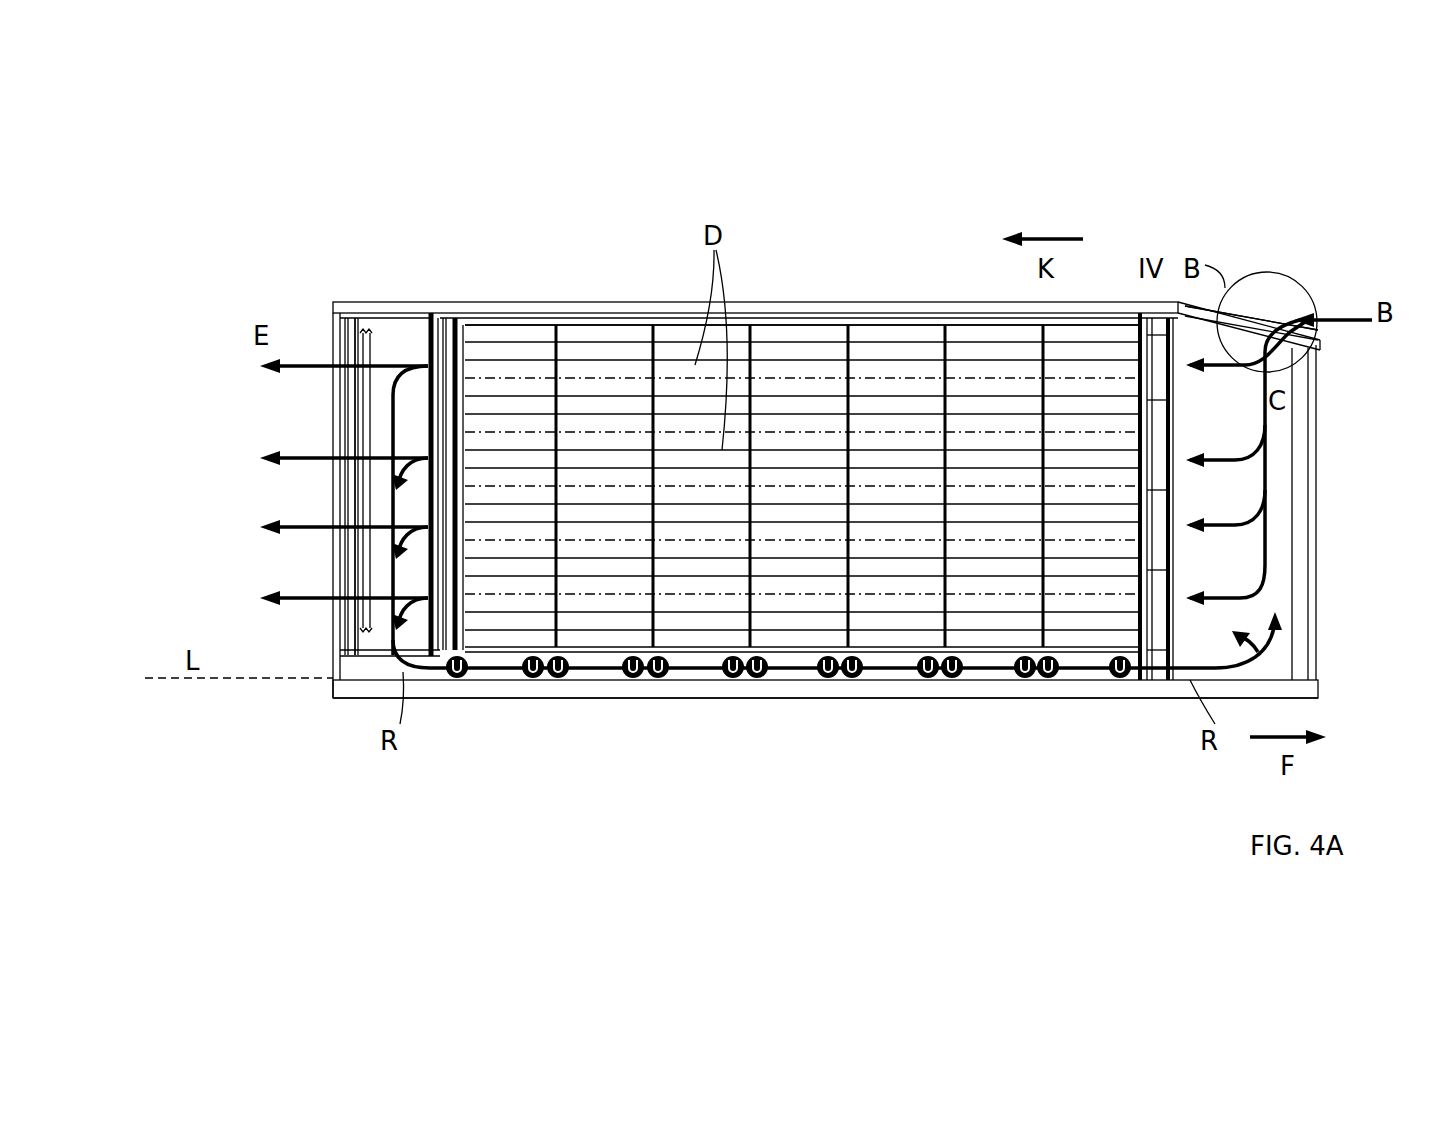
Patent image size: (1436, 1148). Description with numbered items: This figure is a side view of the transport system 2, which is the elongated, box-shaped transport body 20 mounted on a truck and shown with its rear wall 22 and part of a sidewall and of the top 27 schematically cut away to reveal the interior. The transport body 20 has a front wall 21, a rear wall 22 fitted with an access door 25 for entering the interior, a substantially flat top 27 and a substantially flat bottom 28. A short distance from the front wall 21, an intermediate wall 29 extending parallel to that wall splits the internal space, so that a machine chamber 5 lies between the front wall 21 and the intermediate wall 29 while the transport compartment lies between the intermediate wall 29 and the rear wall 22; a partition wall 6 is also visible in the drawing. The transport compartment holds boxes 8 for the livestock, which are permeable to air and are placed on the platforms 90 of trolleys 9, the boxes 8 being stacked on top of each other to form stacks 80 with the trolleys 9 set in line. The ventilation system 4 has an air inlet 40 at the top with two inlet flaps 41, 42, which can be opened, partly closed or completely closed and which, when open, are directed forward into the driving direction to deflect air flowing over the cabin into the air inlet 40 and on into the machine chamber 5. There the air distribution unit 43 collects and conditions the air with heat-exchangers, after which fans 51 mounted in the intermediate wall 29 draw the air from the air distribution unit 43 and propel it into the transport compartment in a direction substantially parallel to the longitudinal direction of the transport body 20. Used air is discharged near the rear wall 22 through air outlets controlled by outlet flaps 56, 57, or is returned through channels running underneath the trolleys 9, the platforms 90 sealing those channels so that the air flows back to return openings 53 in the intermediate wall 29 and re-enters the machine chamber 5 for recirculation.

The transport system 2 is at (303, 243).
The ventilation system 4 is at (1222, 200).
The machine chamber 5 is at (1310, 368).
The partition wall 6 is at (452, 325).
The boxes 8 is at (915, 425).
The trolleys 9 is at (694, 657).
The transport body 20 is at (435, 312).
The front wall 21 is at (1320, 470).
The rear wall 22 is at (335, 483).
The access door 25 is at (335, 392).
The top 27 is at (533, 305).
The bottom 28 is at (490, 688).
The intermediate wall 29 is at (1200, 373).
The air inlet 40 is at (1255, 312).
The inlet flap 41 is at (1318, 305).
The inlet flap 42 is at (1251, 318).
The air distribution unit 43 is at (1296, 425).
The fans 51 is at (1170, 440).
The return openings 53 is at (1165, 688).
The outlet flap 56 is at (372, 316).
The outlet flap 57 is at (395, 332).
The stacks 80 is at (512, 633).
The platforms 90 is at (975, 670).